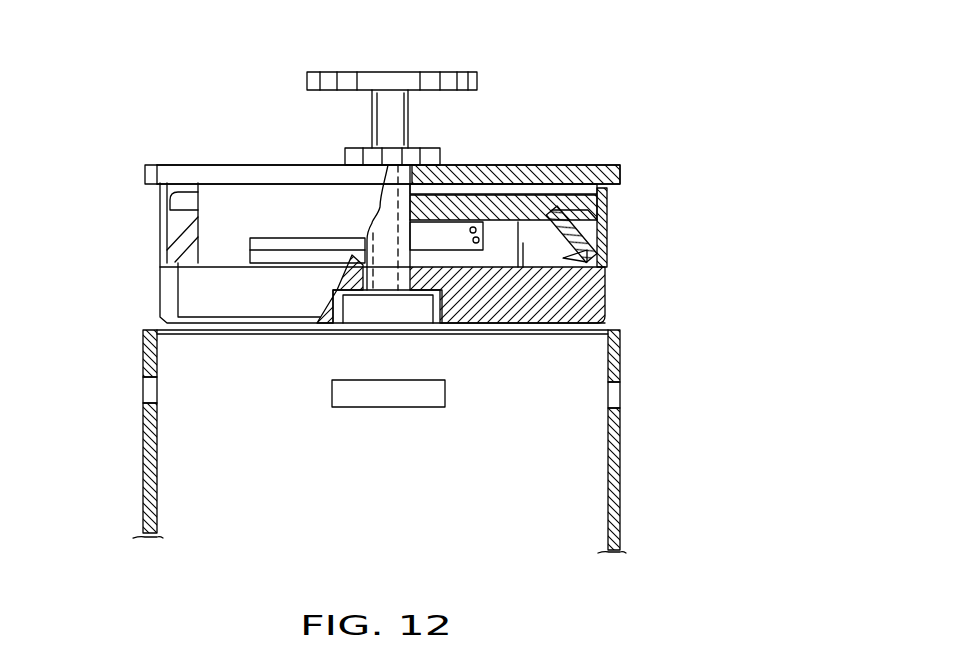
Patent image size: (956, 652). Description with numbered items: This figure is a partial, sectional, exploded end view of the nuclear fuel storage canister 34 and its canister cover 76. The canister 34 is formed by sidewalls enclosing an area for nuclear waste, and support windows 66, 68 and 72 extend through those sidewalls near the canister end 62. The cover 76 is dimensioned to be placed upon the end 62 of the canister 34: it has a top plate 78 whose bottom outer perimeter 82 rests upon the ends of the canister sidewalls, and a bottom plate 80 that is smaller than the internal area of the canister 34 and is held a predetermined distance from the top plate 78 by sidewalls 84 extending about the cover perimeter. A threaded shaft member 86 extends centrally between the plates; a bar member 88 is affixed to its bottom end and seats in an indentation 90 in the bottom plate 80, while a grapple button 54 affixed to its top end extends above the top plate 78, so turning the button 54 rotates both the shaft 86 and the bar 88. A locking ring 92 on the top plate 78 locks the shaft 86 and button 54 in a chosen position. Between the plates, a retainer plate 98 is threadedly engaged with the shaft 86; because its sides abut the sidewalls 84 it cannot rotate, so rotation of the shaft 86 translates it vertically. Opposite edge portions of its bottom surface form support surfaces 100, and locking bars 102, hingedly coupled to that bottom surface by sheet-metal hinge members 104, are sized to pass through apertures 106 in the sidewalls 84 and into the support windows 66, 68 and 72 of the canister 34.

The storage canister 34 is at (141, 482).
The grapple button 54 is at (413, 72).
The end of canister 62 is at (157, 330).
The support window 66 is at (386, 395).
The support window 68 is at (143, 388).
The support window 72 is at (624, 387).
The canister cover 76 is at (177, 160).
The top plate 78 is at (590, 167).
The bottom plate 80 is at (607, 287).
The bottom outer perimeter 82 is at (610, 190).
The sidewalls 84 is at (250, 192).
The threaded shaft member 86 is at (410, 212).
The bar member 88 is at (415, 313).
The indentation 90 is at (348, 312).
The locking ring 92 is at (423, 150).
The retainer plate 98 is at (515, 190).
The support surfaces 100 is at (607, 225).
The locking bars 102 is at (170, 235).
The hinge members 104 is at (570, 253).
The apertures 106 is at (607, 250).